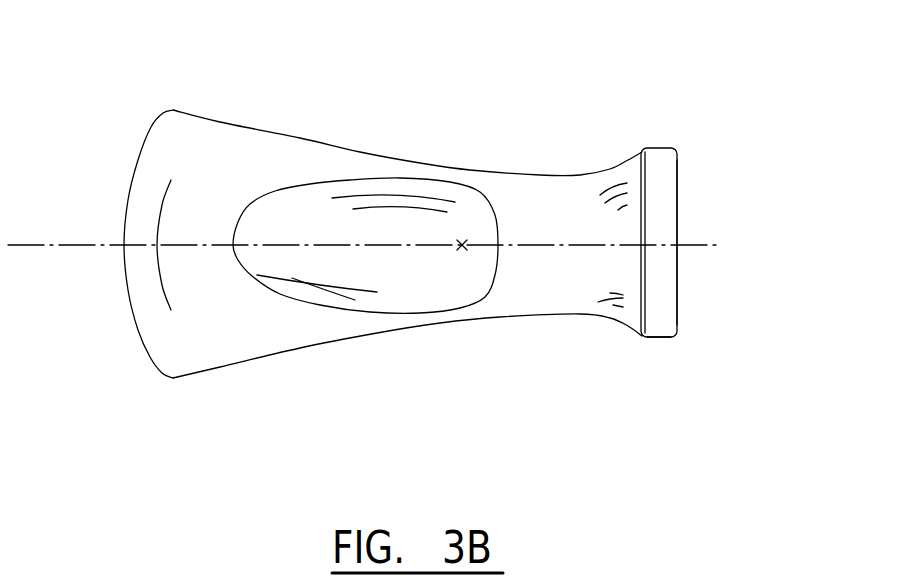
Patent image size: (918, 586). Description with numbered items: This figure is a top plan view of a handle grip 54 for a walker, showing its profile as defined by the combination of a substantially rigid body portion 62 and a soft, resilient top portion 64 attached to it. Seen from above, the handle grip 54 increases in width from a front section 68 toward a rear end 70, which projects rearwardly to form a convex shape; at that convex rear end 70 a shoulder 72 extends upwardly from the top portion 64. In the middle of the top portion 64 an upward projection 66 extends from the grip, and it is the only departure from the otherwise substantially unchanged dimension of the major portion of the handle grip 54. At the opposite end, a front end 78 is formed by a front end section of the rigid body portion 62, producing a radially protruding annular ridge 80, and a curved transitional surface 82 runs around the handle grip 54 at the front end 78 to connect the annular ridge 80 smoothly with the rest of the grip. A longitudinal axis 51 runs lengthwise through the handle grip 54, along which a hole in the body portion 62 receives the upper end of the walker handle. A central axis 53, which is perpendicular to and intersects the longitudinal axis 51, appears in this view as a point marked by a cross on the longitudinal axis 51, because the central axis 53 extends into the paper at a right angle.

The longitudinal axis 51 is at (700, 247).
The central axis 53 is at (462, 243).
The handle grip 54 is at (359, 152).
The body portion 62 is at (659, 148).
The top portion 64 is at (577, 291).
The upward projection 66 is at (395, 293).
The front section 68 is at (583, 175).
The rear end 70 is at (133, 184).
The shoulder 72 is at (147, 291).
The front end 78 is at (678, 225).
The annular ridge 80 is at (660, 339).
The curved transitional surface 82 is at (617, 318).